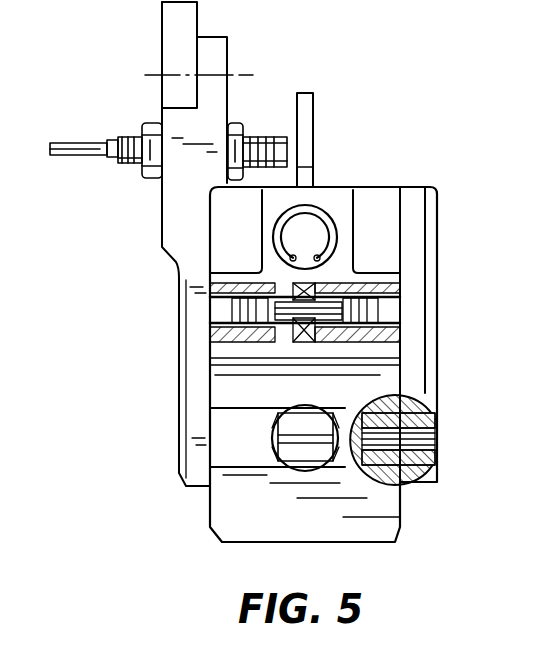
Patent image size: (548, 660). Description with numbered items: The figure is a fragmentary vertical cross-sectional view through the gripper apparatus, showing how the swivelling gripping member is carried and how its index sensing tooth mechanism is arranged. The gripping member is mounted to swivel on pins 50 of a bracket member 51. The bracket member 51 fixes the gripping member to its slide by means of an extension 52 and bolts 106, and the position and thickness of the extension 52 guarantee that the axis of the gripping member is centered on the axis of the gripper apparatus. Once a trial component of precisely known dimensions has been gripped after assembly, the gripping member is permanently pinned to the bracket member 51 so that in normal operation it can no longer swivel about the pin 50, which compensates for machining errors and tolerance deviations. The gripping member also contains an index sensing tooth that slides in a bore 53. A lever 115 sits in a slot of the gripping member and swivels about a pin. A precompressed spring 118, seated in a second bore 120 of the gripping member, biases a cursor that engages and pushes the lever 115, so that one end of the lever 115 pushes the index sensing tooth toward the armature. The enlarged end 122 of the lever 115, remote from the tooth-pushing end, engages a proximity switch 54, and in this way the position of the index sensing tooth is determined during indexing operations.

The pin 50 is at (433, 418).
The bracket member 51 is at (427, 220).
The extension 52 is at (170, 213).
The bore 53 is at (323, 463).
The proximity switch 54 is at (267, 143).
The bolts 106 is at (230, 75).
The lever 115 is at (313, 175).
The precompressed spring 118 is at (330, 220).
The bore 120 is at (322, 243).
The enlarged end 122 is at (313, 107).